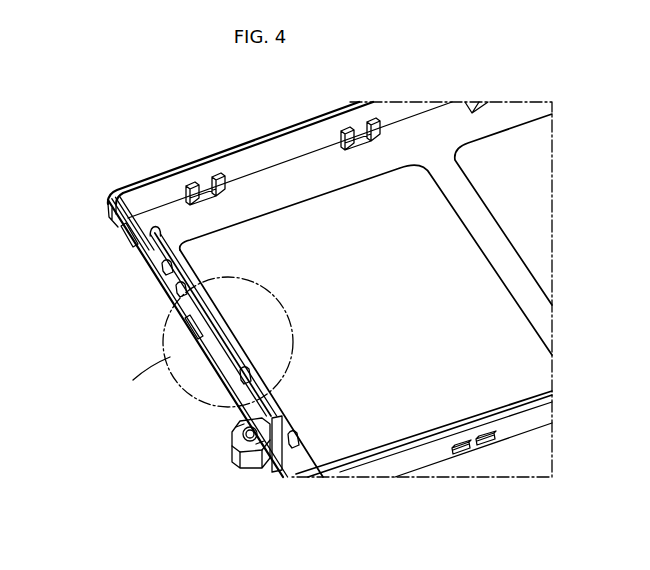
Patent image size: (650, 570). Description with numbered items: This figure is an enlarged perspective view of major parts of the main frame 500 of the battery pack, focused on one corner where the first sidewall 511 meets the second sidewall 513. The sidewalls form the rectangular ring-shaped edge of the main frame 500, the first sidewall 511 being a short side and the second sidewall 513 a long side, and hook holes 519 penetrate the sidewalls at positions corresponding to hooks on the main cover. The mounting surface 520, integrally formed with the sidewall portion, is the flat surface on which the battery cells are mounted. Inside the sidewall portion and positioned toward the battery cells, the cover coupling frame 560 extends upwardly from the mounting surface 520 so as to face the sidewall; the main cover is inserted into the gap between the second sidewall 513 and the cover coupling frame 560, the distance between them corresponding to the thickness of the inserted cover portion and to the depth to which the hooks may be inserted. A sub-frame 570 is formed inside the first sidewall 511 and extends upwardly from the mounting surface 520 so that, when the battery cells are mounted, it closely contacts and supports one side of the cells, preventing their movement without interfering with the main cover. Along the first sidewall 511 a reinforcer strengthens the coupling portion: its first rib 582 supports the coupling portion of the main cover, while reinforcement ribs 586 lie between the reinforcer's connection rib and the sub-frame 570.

The main frame 500 is at (206, 408).
The first sidewall 511 is at (157, 280).
The second sidewall 513 is at (138, 184).
The hook holes 519 is at (122, 234).
The mounting surface 520 is at (327, 168).
The cover coupling frame 560 is at (253, 157).
The sub-frame 570 is at (178, 243).
The first rib 582 is at (142, 236).
The reinforcement rib 586 is at (174, 258).